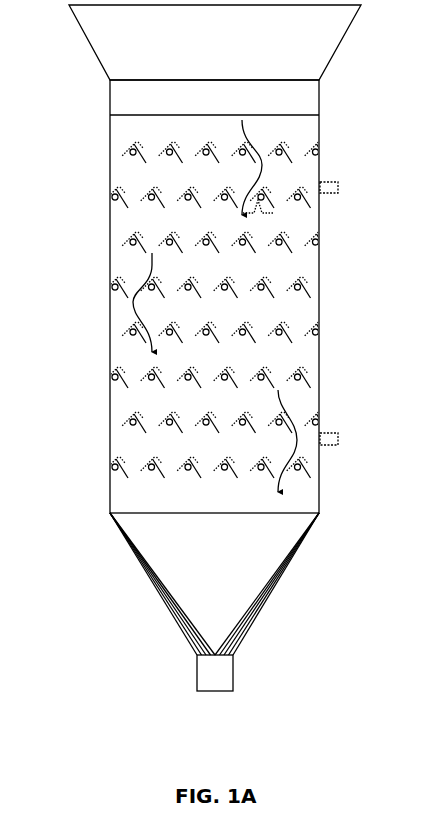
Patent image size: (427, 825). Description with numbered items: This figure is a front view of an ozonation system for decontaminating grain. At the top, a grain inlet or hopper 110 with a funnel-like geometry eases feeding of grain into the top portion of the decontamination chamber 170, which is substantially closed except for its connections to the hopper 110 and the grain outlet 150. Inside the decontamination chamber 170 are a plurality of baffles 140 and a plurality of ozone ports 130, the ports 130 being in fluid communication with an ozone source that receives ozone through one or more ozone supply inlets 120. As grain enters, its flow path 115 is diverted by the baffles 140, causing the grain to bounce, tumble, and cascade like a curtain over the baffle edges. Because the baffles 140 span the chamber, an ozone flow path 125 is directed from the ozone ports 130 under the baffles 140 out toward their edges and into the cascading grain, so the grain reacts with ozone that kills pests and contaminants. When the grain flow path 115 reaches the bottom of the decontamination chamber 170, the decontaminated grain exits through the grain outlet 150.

The grain inlet or hopper 110 is at (347, 38).
The grain flow path 115 is at (250, 140).
The ozone supply inlet 120 is at (337, 423).
The ozone flow path 125 is at (273, 212).
The ozone port 130 is at (133, 240).
The baffle 140 is at (152, 466).
The grain outlet 150 is at (242, 659).
The decontamination chamber 170 is at (205, 496).